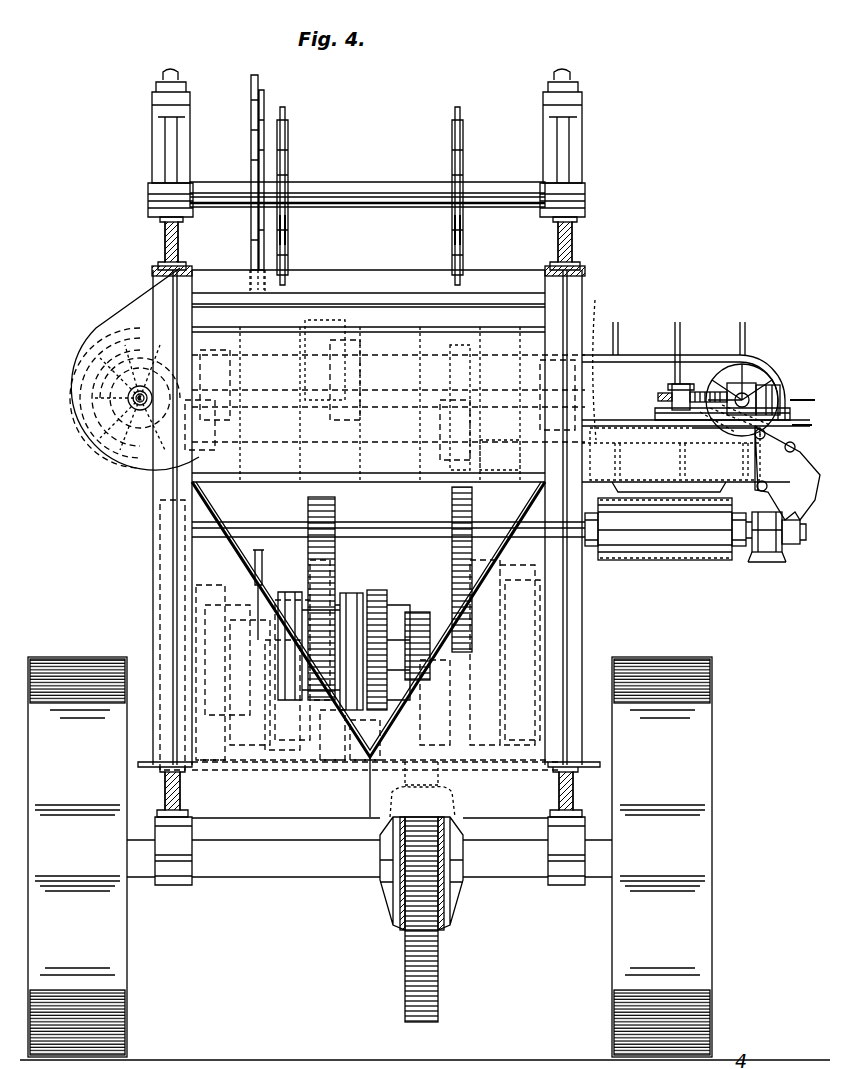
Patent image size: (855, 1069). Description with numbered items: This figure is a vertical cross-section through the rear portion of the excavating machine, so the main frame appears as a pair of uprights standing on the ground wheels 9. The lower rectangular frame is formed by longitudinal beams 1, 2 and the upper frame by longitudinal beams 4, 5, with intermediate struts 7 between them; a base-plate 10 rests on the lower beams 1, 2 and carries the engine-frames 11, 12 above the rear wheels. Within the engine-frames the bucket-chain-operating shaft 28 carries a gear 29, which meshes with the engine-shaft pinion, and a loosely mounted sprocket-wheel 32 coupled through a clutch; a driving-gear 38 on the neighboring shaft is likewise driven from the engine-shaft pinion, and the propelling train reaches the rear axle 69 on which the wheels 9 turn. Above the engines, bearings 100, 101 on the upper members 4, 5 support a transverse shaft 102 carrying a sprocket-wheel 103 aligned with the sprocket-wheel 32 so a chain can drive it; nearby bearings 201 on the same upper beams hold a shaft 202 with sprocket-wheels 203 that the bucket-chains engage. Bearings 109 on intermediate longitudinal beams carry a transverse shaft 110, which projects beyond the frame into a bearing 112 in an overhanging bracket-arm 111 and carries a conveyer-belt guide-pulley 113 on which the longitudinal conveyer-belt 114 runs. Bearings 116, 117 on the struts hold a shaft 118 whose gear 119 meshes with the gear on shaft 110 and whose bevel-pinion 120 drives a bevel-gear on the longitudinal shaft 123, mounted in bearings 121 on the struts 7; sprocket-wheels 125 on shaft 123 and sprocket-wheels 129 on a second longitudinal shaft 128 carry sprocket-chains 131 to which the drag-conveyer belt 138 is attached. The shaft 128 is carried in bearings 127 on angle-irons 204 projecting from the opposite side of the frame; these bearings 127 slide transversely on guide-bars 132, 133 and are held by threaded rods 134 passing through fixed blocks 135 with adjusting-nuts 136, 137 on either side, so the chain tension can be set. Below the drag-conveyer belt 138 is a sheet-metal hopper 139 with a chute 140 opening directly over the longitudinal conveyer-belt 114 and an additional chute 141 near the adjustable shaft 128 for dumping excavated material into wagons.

The longitudinal beam 1 is at (168, 790).
The longitudinal beam 2 is at (578, 790).
The longitudinal beam 4 is at (165, 237).
The longitudinal beam 5 is at (572, 250).
The strut 7 is at (162, 566).
The wheels 9 is at (120, 940).
The base-plate 10 is at (265, 774).
The engine-frame 11 is at (516, 587).
The engine-frame 12 is at (214, 583).
The bucket-chain-operating shaft 28 is at (398, 602).
The gear 29 is at (336, 506).
The sprocket-wheel 32 is at (262, 574).
The driving-gear 38 is at (326, 615).
The rear axle 69 is at (302, 866).
The bearing 100 is at (576, 150).
The bearing 101 is at (158, 152).
The shaft 102 is at (376, 183).
The sprocket-wheel 103 is at (258, 124).
The bearings 109 is at (154, 516).
The shaft 110 is at (402, 524).
The overhanging bracket-arm 111 is at (766, 540).
The bearing 112 is at (770, 550).
The conveyer-belt guide-pulley 113 is at (626, 536).
The longitudinal conveyer-belt 114 is at (668, 560).
The bearing 116 is at (551, 372).
The bearing 117 is at (197, 435).
The shaft 118 is at (362, 388).
The gear 119 is at (453, 419).
The bevel-pinion 120 is at (226, 381).
The bearing 121 is at (142, 410).
The shaft 123 is at (136, 402).
The sprocket-wheel 125 is at (133, 362).
The bearing 127 is at (746, 398).
The shaft 128 is at (782, 385).
The sprocket-wheel 129 is at (712, 368).
The sprocket-chain 131 is at (601, 433).
The guide-bar 132 is at (676, 384).
The guide-bar 133 is at (660, 413).
The threaded rod 134 is at (660, 397).
The fixed block 135 is at (682, 416).
The adjusting-nut 136 is at (678, 395).
The adjusting-nut 137 is at (696, 392).
The drag-conveyer belt 138 is at (297, 455).
The hopper 139 is at (62, 385).
The chute 140 is at (655, 495).
The chute 141 is at (787, 473).
The bearing 201 is at (160, 197).
The shaft 202 is at (382, 199).
The sprocket-wheel 203 is at (284, 232).
The angle-iron 204 is at (585, 444).